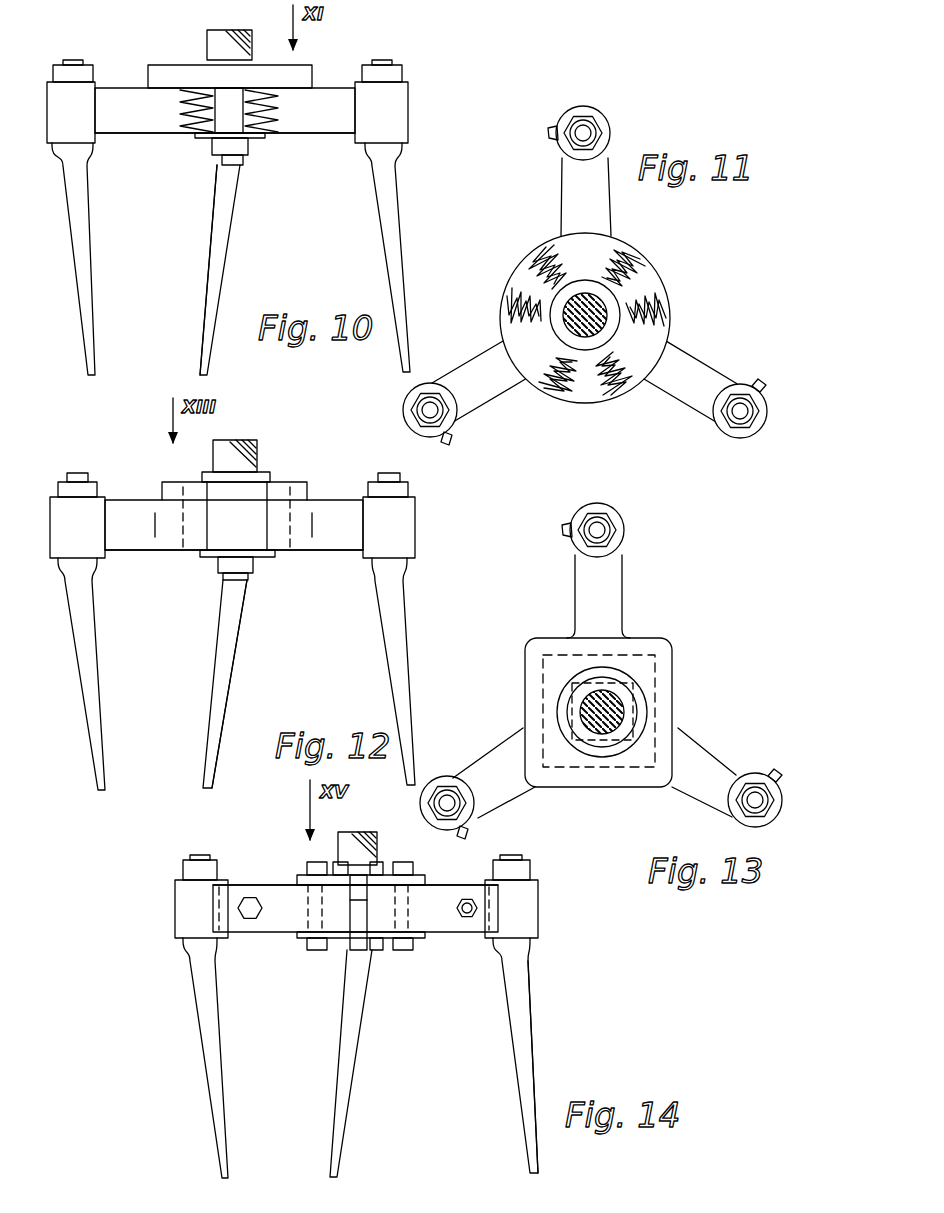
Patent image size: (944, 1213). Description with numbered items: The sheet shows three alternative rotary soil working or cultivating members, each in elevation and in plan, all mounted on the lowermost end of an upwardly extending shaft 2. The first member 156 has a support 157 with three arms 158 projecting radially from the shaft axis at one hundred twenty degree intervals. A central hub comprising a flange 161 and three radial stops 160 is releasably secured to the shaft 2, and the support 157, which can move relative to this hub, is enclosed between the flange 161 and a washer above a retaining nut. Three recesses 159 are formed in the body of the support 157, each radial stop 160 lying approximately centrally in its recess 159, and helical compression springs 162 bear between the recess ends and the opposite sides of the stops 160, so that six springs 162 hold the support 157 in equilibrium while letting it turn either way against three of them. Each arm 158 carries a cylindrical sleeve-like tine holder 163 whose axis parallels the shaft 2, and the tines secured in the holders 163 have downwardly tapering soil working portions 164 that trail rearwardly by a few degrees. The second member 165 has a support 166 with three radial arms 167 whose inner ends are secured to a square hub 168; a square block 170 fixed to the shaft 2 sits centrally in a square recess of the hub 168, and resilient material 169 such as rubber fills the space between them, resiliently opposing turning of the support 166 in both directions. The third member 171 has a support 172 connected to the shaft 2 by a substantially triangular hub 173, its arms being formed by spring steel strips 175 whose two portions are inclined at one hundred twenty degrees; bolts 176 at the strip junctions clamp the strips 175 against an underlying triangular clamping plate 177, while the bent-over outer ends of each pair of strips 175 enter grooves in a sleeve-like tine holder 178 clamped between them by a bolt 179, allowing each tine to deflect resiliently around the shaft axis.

In FIG. 10, the shaft 2 is at (230, 30).
In FIG. 11, the shaft 2 is at (583, 292).
In FIG. 12, the shaft 2 is at (250, 437).
In FIG. 13, the shaft 2 is at (593, 707).
In FIG. 14, the shaft 2 is at (380, 813).
In FIG. 10, the rotary soil working or cultivating member 156 is at (205, 293).
In FIG. 10, the support 157 is at (342, 137).
In FIG. 11, the support 157 is at (470, 342).
In FIG. 10, the arms 158 is at (340, 88).
In FIG. 11, the arms 158 is at (577, 193).
In FIG. 11, the recesses 159 is at (512, 326).
In FIG. 10, the radial stops 160 is at (227, 117).
In FIG. 11, the radial stops 160 is at (513, 270).
In FIG. 10, the flange 161 is at (168, 50).
In FIG. 11, the flange 161 is at (648, 345).
In FIG. 10, the helical compression springs 162 is at (185, 133).
In FIG. 11, the helical compression springs 162 is at (630, 257).
In FIG. 10, the tine holder 163 is at (430, 118).
In FIG. 11, the tine holder 163 is at (605, 117).
In FIG. 12, the tine holder 163 is at (98, 543).
In FIG. 13, the tine holder 163 is at (627, 517).
In FIG. 10, the soil working portions 164 is at (215, 235).
In FIG. 11, the soil working portions 164 is at (555, 133).
In FIG. 12, the soil working portions 164 is at (217, 653).
In FIG. 13, the soil working portions 164 is at (787, 755).
In FIG. 14, the soil working portions 164 is at (340, 1050).
In FIG. 12, the rotary soil working or cultivating member 165 is at (382, 618).
In FIG. 12, the support 166 is at (332, 553).
In FIG. 13, the support 166 is at (520, 663).
In FIG. 12, the arms 167 is at (342, 500).
In FIG. 13, the arms 167 is at (587, 585).
In FIG. 12, the hub 168 is at (215, 478).
In FIG. 13, the hub 168 is at (672, 643).
In FIG. 12, the resilient material 169 is at (300, 477).
In FIG. 13, the resilient material 169 is at (650, 670).
In FIG. 12, the square block 170 is at (227, 530).
In FIG. 14, the rotary soil working or cultivating member 171 is at (513, 1047).
In FIG. 14, the support 172 is at (242, 882).
In FIG. 14, the hub 173 is at (339, 866).
In FIG. 14, the resilient strips 175 is at (462, 870).
In FIG. 14, the bolts 176 is at (407, 942).
In FIG. 14, the clamping plate 177 is at (344, 957).
In FIG. 14, the tine holder 178 is at (182, 898).
In FIG. 14, the bolt 179 is at (253, 917).